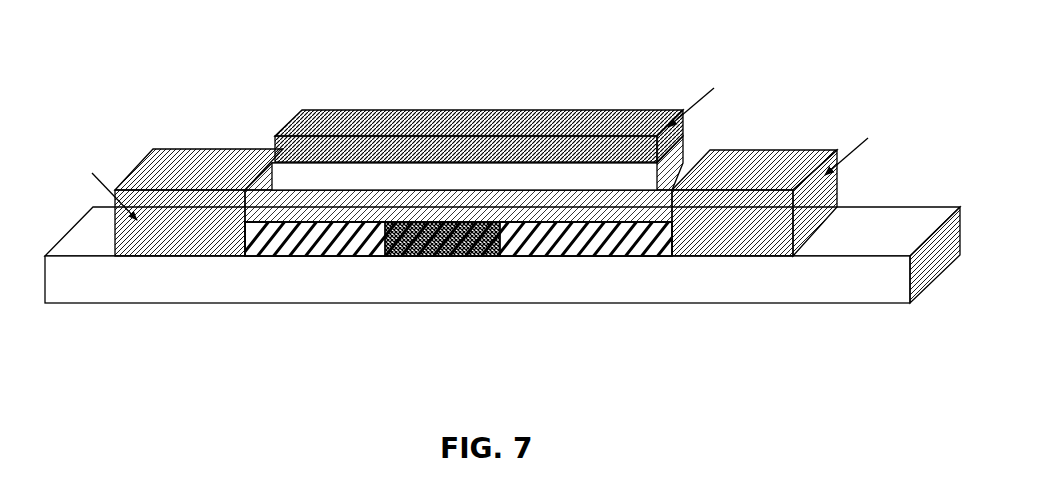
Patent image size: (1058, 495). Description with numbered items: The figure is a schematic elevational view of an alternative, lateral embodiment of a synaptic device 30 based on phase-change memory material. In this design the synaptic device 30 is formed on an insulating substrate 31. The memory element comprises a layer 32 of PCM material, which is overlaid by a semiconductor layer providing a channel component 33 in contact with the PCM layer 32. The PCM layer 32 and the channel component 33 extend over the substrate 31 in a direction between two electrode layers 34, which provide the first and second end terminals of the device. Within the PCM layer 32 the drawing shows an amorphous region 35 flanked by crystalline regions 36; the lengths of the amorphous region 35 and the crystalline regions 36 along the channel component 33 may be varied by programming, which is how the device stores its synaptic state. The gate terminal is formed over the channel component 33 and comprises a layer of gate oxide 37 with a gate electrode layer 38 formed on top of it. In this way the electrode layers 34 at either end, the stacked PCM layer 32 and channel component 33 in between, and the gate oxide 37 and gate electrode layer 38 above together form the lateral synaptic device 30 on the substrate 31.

The synaptic device 30 is at (824, 68).
The insulating substrate 31 is at (820, 298).
The layer of PCM material 32 is at (273, 241).
The channel component 33 is at (495, 218).
The electrode layers 34 is at (197, 243).
The amorphous region 35 is at (443, 232).
The crystalline regions 36 is at (342, 232).
The layer of gate oxide 37 is at (353, 173).
The gate electrode layer 38 is at (470, 122).